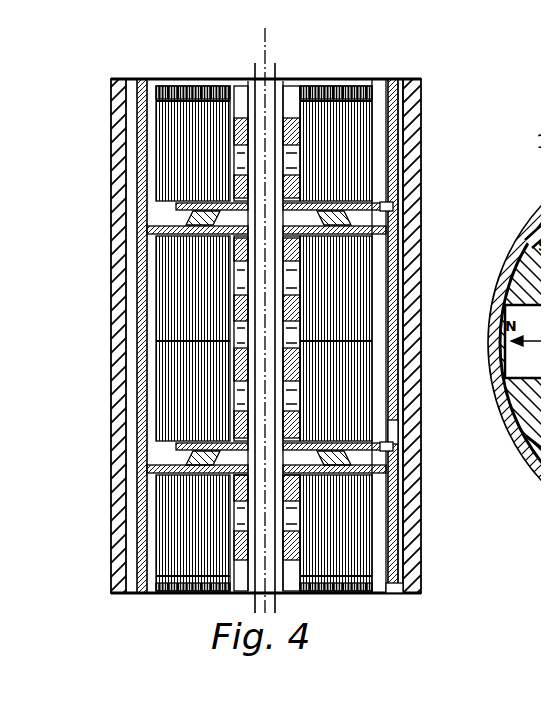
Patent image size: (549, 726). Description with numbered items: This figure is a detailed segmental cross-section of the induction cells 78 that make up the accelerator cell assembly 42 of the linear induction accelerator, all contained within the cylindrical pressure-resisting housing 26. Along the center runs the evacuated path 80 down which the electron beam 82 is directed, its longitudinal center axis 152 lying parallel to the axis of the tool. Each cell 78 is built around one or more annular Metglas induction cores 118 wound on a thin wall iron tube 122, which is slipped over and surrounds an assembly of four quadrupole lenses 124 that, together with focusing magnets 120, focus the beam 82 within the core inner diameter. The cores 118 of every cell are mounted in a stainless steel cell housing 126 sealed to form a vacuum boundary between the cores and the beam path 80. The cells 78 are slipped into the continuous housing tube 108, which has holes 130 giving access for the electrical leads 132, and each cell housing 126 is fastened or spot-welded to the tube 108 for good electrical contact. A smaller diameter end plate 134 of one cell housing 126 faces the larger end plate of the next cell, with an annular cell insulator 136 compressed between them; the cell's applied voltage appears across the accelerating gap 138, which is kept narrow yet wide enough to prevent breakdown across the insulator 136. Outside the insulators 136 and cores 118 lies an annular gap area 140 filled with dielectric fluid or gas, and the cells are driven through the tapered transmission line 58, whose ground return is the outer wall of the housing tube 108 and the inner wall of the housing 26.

The housing 26 is at (410, 578).
The accelerator cell assembly 42 is at (413, 100).
The transmission line 58 is at (385, 355).
The induction cell 78 is at (366, 133).
The path 80 is at (330, 150).
The beam 82 is at (270, 73).
The housing tube 108 is at (392, 425).
The induction cores 118 is at (170, 315).
The magnets 120 is at (285, 73).
The thin wall tube 122 is at (405, 395).
The quadrupole lenses 124 is at (300, 325).
The cell housing 126 is at (350, 222).
The holes 130 is at (392, 190).
The electrical leads 132 is at (352, 478).
The smaller diameter end plate 134 is at (185, 210).
The cell insulator 136 is at (148, 222).
The accelerating gap 138 is at (287, 270).
The annular gap area 140 is at (137, 108).
The longitudinal center axis 152 is at (258, 600).